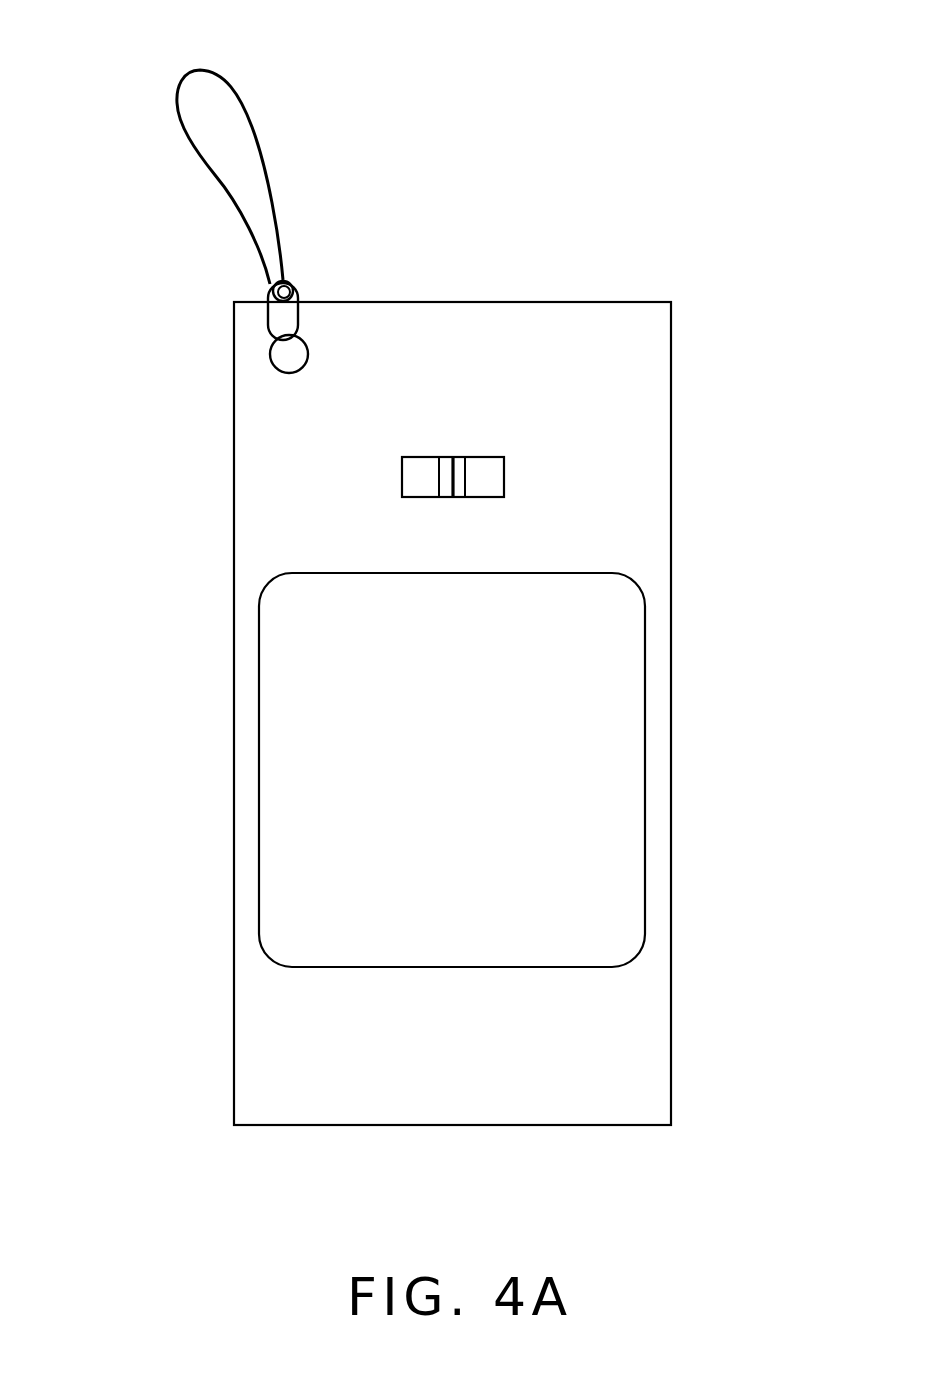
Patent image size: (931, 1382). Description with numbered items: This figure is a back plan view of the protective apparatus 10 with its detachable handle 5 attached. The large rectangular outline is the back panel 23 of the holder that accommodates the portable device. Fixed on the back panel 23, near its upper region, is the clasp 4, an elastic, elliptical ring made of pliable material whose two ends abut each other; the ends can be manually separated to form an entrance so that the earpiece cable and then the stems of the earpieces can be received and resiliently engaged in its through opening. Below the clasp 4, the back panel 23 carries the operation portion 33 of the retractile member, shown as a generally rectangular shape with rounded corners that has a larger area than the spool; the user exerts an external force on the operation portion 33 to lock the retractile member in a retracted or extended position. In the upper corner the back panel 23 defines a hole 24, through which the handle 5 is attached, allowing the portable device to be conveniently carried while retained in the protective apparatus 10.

The protective apparatus 10 is at (481, 52).
The back panel 23 is at (614, 520).
The operation portion 33 is at (632, 818).
The clasp 4 is at (485, 473).
The hole 24 is at (282, 359).
The handle 5 is at (291, 282).